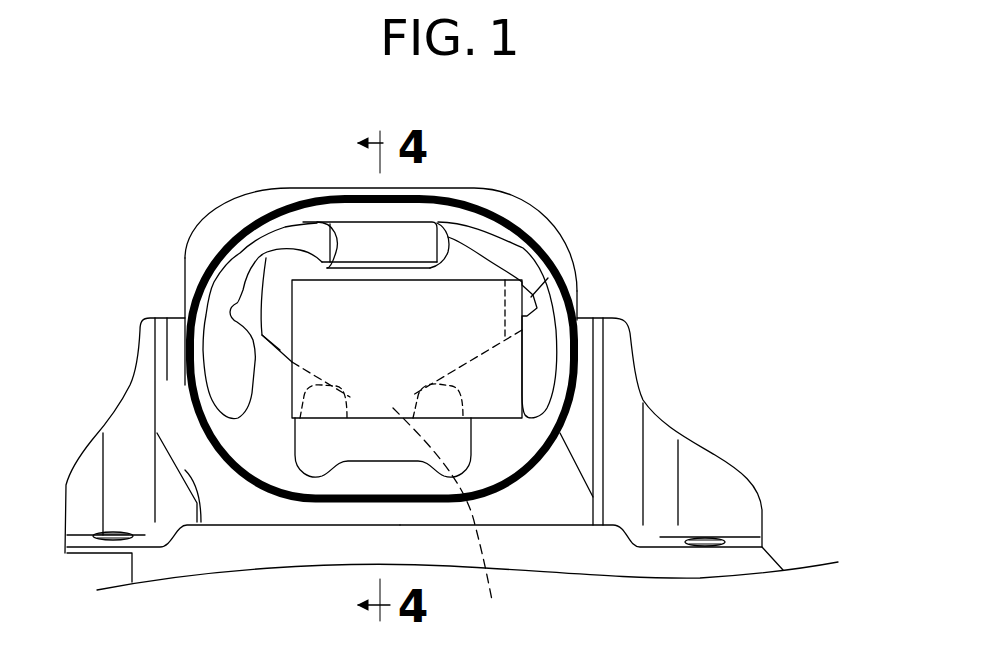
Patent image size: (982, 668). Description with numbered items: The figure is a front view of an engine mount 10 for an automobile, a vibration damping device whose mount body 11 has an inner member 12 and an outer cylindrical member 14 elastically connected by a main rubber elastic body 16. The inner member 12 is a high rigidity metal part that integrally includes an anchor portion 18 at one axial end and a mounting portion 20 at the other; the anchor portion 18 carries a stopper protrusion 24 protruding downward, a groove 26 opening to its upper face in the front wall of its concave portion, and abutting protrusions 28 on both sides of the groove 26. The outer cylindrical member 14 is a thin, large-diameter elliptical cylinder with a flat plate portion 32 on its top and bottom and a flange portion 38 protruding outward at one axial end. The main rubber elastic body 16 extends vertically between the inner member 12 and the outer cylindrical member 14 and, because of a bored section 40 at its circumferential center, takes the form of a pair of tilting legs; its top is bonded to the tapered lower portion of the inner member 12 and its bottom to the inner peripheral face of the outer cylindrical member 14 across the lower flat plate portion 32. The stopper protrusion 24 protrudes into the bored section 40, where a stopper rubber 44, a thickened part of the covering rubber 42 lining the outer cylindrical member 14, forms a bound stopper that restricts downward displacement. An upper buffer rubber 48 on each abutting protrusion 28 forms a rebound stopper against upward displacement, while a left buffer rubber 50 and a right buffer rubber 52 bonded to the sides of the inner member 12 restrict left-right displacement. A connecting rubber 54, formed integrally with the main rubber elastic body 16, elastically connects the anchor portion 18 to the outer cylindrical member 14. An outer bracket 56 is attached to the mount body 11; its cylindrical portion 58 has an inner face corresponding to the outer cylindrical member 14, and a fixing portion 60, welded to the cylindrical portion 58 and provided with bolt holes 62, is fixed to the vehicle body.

The engine mount 10 is at (606, 195).
The mount body 11 is at (221, 242).
The inner member 12 is at (532, 352).
The outer cylindrical member 14 is at (535, 469).
The main rubber elastic body 16 is at (240, 381).
The anchor portion 18 is at (277, 303).
The mounting portion 20 is at (487, 388).
The stopper protrusion 24 is at (449, 516).
The groove 26 is at (330, 250).
The abutting protrusions 28 is at (303, 227).
The flat plate portion 32 is at (421, 196).
The flange portion 38 is at (560, 437).
The bored section 40 is at (300, 460).
The covering rubber 42 is at (528, 253).
The stopper rubber 44 is at (363, 472).
The upper buffer rubber 48 is at (298, 257).
The left buffer rubber 50 is at (245, 318).
The right buffer rubber 52 is at (525, 305).
The connecting rubber 54 is at (377, 247).
The outer bracket 56 is at (716, 445).
The cylindrical portion 58 is at (242, 475).
The fixing portion 60 is at (648, 565).
The bolt holes 62 is at (112, 533).